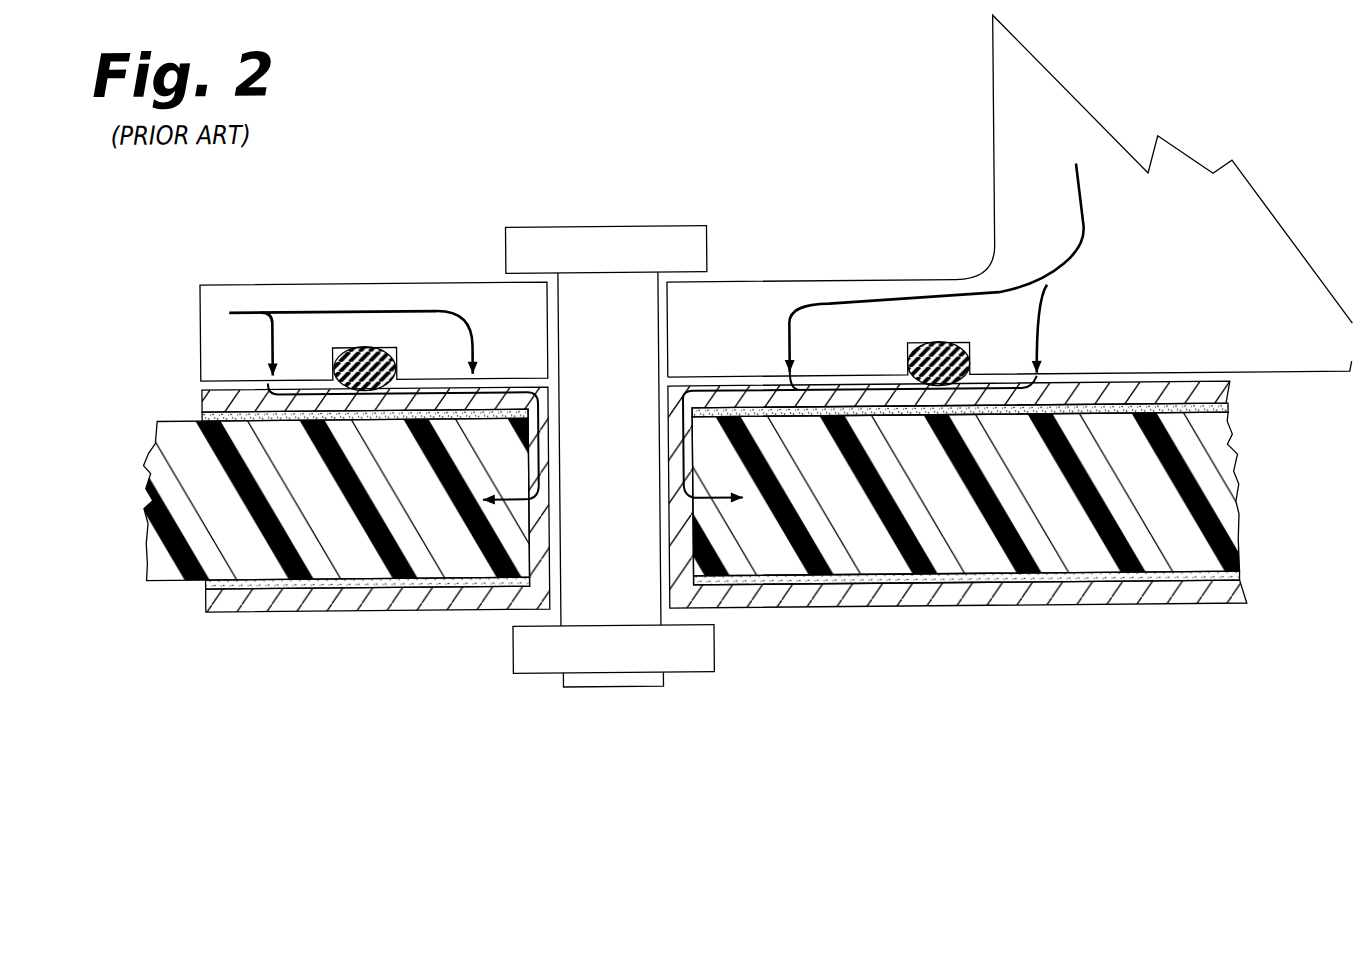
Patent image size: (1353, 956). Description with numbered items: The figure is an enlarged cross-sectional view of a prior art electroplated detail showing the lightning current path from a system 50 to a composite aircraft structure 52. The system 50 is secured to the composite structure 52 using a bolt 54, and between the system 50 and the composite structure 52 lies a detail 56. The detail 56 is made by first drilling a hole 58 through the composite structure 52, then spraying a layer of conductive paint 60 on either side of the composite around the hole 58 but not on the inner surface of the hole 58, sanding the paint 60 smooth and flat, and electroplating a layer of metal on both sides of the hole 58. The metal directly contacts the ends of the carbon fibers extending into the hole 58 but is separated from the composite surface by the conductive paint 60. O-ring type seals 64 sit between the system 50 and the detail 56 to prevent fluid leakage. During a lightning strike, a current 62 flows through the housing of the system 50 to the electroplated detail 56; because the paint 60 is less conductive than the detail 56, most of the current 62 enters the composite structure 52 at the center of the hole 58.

The system 50 is at (212, 337).
The composite aircraft structure 52 is at (147, 526).
The bolt 54 is at (600, 228).
The detail 56 is at (206, 397).
The hole 58 is at (662, 544).
The conductive paint 60 is at (206, 415).
The current 62 is at (328, 308).
The O-ring type seals 64 is at (380, 360).